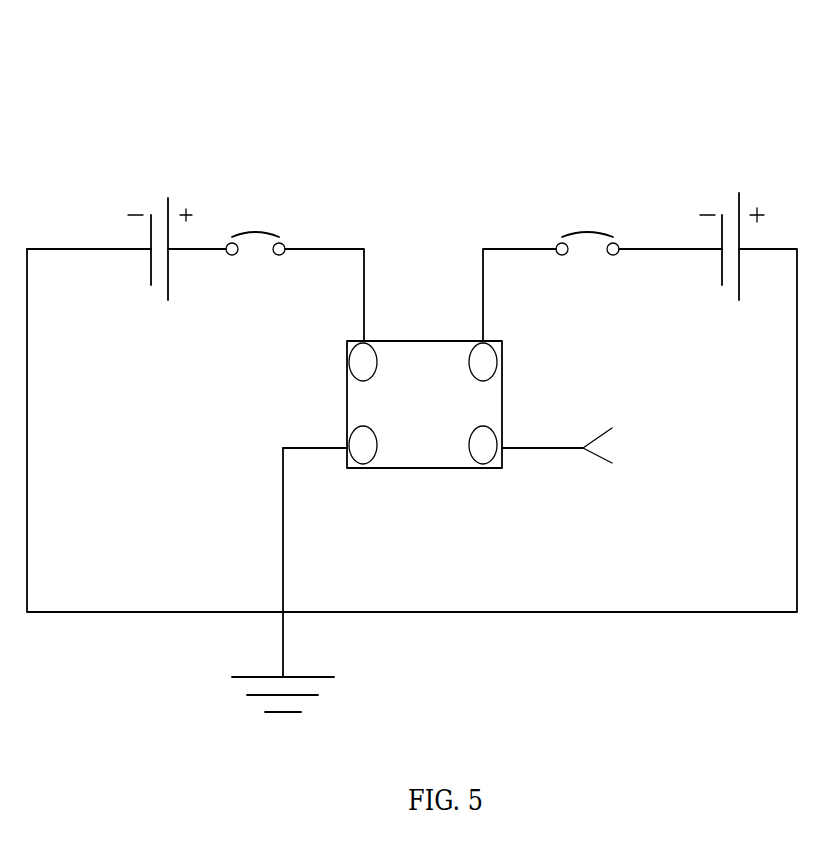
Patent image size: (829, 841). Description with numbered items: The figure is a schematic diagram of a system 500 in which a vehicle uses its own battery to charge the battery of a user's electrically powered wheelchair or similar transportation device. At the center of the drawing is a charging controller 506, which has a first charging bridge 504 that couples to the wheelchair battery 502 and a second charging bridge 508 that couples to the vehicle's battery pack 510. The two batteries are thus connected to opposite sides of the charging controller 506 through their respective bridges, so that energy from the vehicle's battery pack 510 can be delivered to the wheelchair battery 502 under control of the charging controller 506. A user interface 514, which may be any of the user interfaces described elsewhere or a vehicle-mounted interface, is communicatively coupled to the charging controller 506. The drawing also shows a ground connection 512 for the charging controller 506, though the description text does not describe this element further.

The system 500 is at (380, 80).
The wheelchair battery 502 is at (122, 167).
The first charging bridge 504 is at (260, 198).
The charging controller 506 is at (492, 470).
The second charging bridge 508 is at (585, 198).
The vehicle battery pack 510 is at (727, 178).
The ground 512 is at (222, 677).
The user interface 514 is at (688, 468).